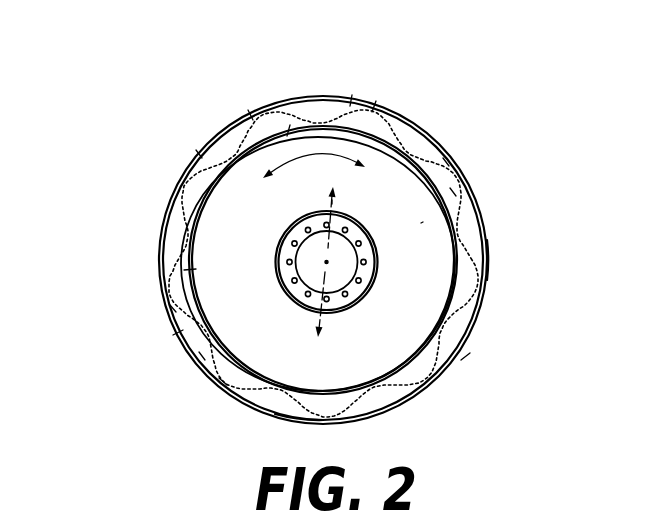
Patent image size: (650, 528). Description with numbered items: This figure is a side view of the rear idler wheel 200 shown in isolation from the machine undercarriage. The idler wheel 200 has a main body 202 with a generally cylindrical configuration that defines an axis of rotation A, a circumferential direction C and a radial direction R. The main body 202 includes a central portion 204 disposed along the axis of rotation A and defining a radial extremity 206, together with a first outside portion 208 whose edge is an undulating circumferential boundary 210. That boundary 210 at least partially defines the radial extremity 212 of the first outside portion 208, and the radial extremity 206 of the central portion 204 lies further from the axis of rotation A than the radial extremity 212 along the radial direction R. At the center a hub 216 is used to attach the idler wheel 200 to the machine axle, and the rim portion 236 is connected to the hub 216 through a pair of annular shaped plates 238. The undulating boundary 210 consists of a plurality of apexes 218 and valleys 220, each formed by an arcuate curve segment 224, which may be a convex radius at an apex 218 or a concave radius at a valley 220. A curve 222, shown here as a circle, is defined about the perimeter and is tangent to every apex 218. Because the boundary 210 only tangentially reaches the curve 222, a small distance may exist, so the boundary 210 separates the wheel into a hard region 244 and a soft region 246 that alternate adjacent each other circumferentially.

The rear idler wheel 200 is at (137, 193).
The main body 202 is at (235, 113).
The central portion 204 is at (403, 403).
The radial extremity of the central portion 206 is at (460, 358).
The first outside portion 208 is at (460, 313).
The undulating circumferential boundary 210 is at (465, 292).
The radial extremity of the first outside portion 212 is at (352, 105).
The hub 216 is at (375, 273).
The apex 218 is at (202, 158).
The valley 220 is at (297, 132).
The curve 222 is at (375, 110).
The curve segment 224 is at (445, 163).
The rim portion 236 is at (504, 262).
The annular shaped plate 238 is at (423, 222).
The hard region 244 is at (173, 308).
The soft region 246 is at (185, 330).
The axis of rotation A is at (328, 264).
The radial direction R is at (332, 202).
The circumferential direction C is at (307, 162).